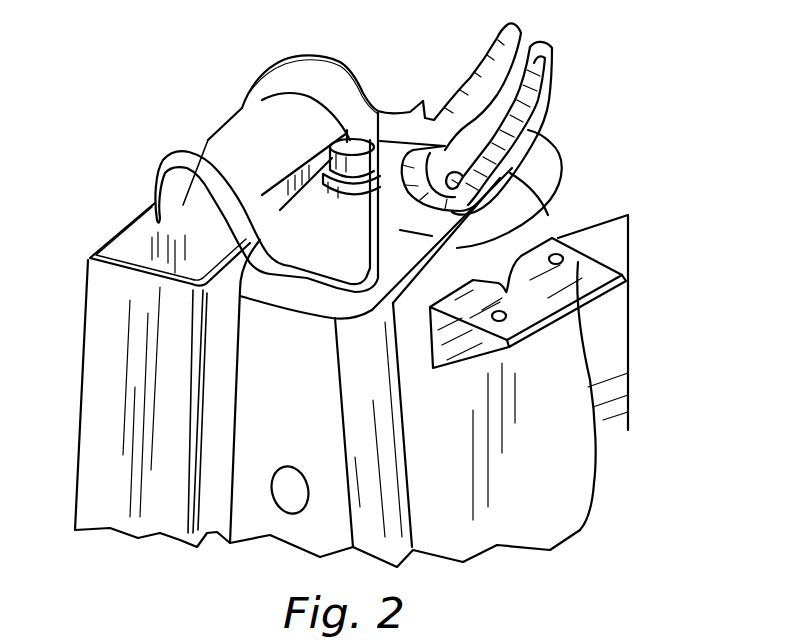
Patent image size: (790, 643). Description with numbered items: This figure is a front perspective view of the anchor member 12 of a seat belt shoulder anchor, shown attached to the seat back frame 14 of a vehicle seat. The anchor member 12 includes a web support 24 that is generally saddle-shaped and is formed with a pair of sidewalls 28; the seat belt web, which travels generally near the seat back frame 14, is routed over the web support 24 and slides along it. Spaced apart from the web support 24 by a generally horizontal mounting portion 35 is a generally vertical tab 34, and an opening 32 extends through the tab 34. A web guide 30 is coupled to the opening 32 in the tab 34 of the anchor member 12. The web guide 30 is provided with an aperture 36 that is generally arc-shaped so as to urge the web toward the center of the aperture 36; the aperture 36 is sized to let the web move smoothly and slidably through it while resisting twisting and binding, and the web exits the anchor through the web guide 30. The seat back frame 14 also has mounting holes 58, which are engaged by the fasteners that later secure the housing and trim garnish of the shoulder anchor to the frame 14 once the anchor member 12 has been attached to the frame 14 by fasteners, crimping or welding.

The anchor member 12 is at (228, 78).
The seat back frame 14 is at (591, 485).
The web support 24 is at (233, 133).
The sidewalls 28 is at (281, 63).
The web guide 30 is at (549, 76).
The opening 32 is at (482, 95).
The tab 34 is at (557, 197).
The mounting portion 35 is at (303, 213).
The aperture 36 is at (540, 132).
The mounting holes 58 is at (499, 312).